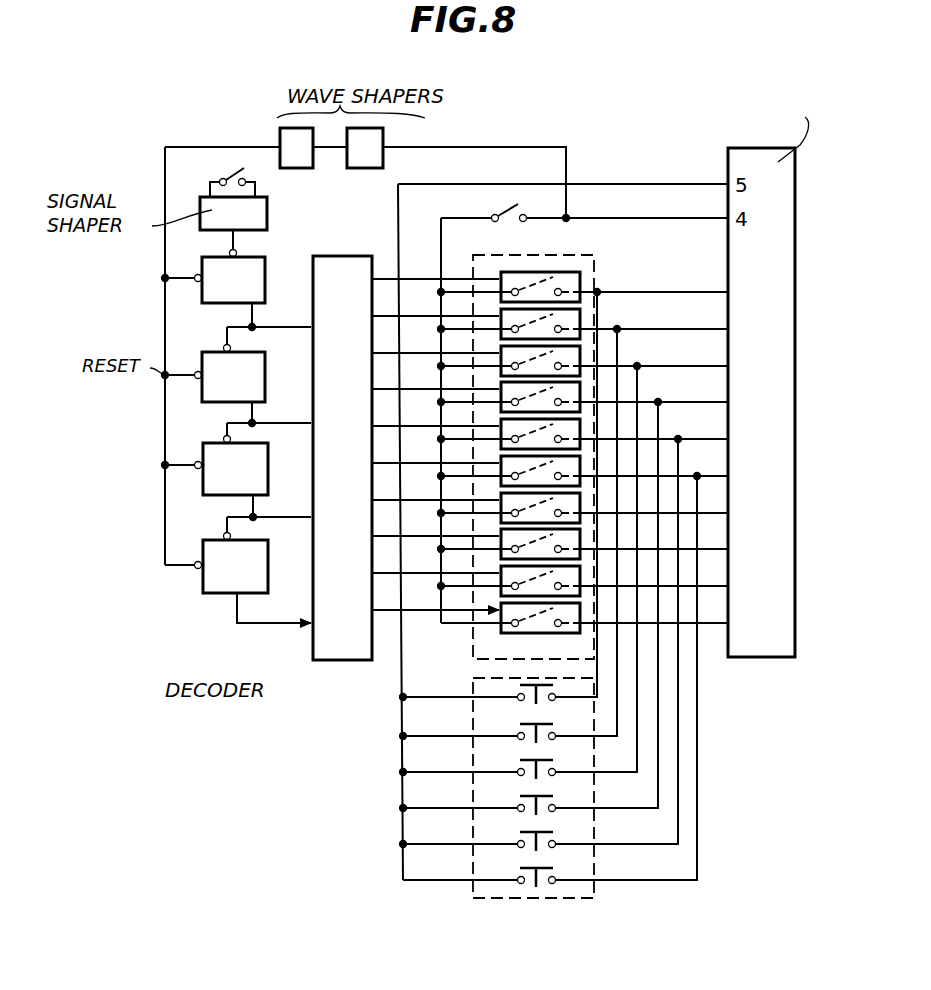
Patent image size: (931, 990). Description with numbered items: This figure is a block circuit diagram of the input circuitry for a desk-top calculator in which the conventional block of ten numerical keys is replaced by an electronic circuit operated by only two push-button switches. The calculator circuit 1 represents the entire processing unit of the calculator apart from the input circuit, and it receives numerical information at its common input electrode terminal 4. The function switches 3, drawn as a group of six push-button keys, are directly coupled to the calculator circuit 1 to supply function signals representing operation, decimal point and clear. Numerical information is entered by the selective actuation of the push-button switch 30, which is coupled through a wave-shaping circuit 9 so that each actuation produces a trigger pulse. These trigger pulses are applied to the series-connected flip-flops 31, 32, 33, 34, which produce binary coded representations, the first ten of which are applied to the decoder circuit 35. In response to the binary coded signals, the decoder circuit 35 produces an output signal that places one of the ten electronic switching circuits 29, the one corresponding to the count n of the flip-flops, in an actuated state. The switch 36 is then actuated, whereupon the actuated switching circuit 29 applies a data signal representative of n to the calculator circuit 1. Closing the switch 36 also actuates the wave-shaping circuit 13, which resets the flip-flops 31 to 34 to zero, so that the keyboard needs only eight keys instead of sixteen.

The calculator circuit 1 is at (773, 660).
The function input switches 3 is at (583, 898).
The common input electrode terminal 4 is at (297, 168).
The wave-shaping circuit 9 is at (267, 222).
The wave-shaping circuit 13 is at (357, 168).
The electronic switching circuits 29 is at (473, 656).
The push-button switch 30 is at (230, 172).
The flip-flop 31 is at (265, 278).
The flip-flop 32 is at (265, 377).
The flip-flop 33 is at (268, 476).
The flip-flop 34 is at (268, 571).
The decoder circuit 35 is at (348, 660).
The switch 36 is at (494, 214).